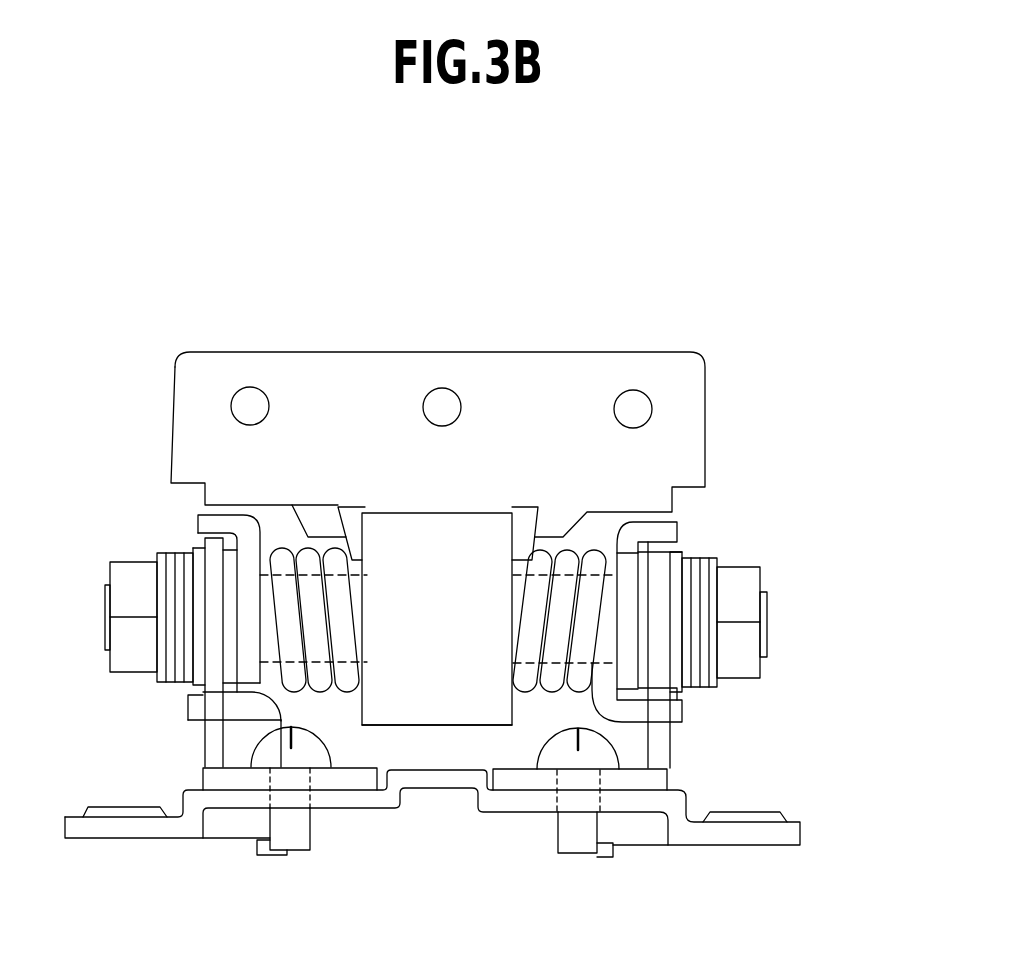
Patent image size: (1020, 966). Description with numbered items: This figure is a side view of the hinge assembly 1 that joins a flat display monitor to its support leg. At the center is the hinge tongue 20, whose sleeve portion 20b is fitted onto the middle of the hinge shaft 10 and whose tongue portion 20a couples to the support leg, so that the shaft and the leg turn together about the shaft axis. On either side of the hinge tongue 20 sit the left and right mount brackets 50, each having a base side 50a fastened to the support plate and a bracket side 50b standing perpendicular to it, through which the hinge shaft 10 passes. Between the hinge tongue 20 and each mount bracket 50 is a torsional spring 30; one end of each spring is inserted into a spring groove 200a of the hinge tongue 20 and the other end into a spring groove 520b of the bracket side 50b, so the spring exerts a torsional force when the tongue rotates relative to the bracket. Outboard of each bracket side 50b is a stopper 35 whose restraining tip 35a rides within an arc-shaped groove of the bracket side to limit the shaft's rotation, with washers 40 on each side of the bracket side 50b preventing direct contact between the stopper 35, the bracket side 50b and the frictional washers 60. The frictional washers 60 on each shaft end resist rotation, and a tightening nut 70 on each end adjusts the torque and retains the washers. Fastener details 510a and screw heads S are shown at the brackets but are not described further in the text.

The hinge assembly 1 is at (790, 288).
The hinge shaft 10 is at (357, 593).
The hinge tongue 20 is at (438, 565).
The tongue portion 20a is at (523, 367).
The sleeve portion 20b is at (430, 697).
The spring groove 200a is at (362, 524).
The torsional spring 30 is at (323, 677).
The stopper 35 is at (252, 615).
The restraining tip 35a is at (207, 525).
The washer 40 is at (642, 635).
The mount bracket 50 is at (464, 754).
The base side 50a is at (650, 782).
The bracket side 50b is at (663, 740).
The frictional washer 60 is at (699, 558).
The tightening nut 70 is at (747, 598).
The fastening screw 510a is at (260, 850).
The spring groove 520b is at (212, 725).
The screw head S is at (548, 752).